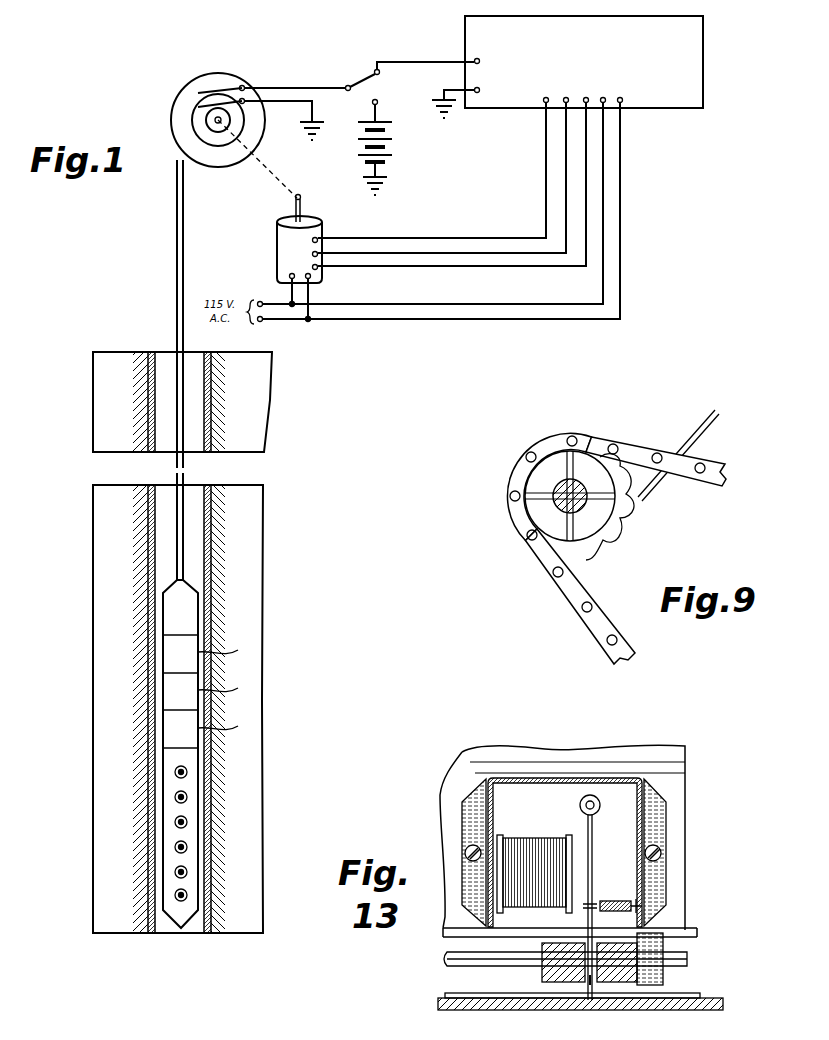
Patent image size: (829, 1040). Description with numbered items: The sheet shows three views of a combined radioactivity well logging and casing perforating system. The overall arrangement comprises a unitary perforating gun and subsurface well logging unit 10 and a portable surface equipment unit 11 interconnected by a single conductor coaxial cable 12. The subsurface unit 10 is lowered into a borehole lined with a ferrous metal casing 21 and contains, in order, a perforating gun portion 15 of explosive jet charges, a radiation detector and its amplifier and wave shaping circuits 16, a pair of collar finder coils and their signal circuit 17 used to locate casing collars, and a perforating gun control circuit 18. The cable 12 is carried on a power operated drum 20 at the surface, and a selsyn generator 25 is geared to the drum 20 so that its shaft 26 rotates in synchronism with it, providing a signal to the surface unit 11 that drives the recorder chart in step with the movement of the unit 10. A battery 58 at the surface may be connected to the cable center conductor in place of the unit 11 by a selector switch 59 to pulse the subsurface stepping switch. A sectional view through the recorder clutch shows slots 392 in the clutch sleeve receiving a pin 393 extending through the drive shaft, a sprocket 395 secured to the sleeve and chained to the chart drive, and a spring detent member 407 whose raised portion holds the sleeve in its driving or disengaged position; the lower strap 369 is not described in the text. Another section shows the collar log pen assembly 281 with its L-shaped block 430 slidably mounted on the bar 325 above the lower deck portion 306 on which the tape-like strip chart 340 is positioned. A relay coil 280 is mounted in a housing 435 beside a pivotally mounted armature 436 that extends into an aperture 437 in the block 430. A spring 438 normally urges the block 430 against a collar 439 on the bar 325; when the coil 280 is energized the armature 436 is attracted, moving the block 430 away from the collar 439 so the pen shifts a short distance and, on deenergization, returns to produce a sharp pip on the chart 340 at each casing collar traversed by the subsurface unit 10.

In FIG. 1, the unitary perforating gun and subsurface well logging unit 10 is at (170, 577).
In FIG. 1, the portable surface equipment unit 11 is at (700, 78).
In FIG. 1, the single conductor coaxial cable 12 is at (168, 275).
In FIG. 1, the perforating gun portion 15 is at (172, 808).
In FIG. 1, the radiation detector and associated amplifier and wave shaping circuits 16 is at (172, 728).
In FIG. 1, the collar finder coils and associated signal circuit 17 is at (172, 690).
In FIG. 1, the perforating gun control circuit 18 is at (172, 652).
In FIG. 1, the power operated drum 20 is at (174, 90).
In FIG. 1, the ferrous metal casing 21 is at (215, 528).
In FIG. 1, the selsyn generator 25 is at (285, 245).
In FIG. 1, the shaft 26 is at (305, 208).
In FIG. 1, the battery 58 is at (392, 144).
In FIG. 1, the selector switch 59 is at (366, 76).
In FIG. 9, the lower strap 369 is at (595, 620).
In FIG. 9, the slots 392 is at (560, 460).
In FIG. 9, the pin 393 is at (576, 450).
In FIG. 9, the sprocket 395 is at (630, 516).
In FIG. 9, the spring detent member 407 is at (712, 424).
In FIG. 13, the relay coil 280 is at (552, 812).
In FIG. 13, the collar log pen assembly 281 is at (716, 796).
In FIG. 13, the lower deck portion 306 is at (494, 1010).
In FIG. 13, the bar 325 is at (462, 952).
In FIG. 13, the tape-like strip chart 340 is at (460, 994).
In FIG. 13, the L-shaped block 430 is at (545, 982).
In FIG. 13, the housing 435 is at (542, 776).
In FIG. 13, the armature 436 is at (588, 978).
In FIG. 13, the aperture 437 is at (590, 985).
In FIG. 13, the spring 438 is at (615, 900).
In FIG. 13, the collar 439 is at (668, 982).